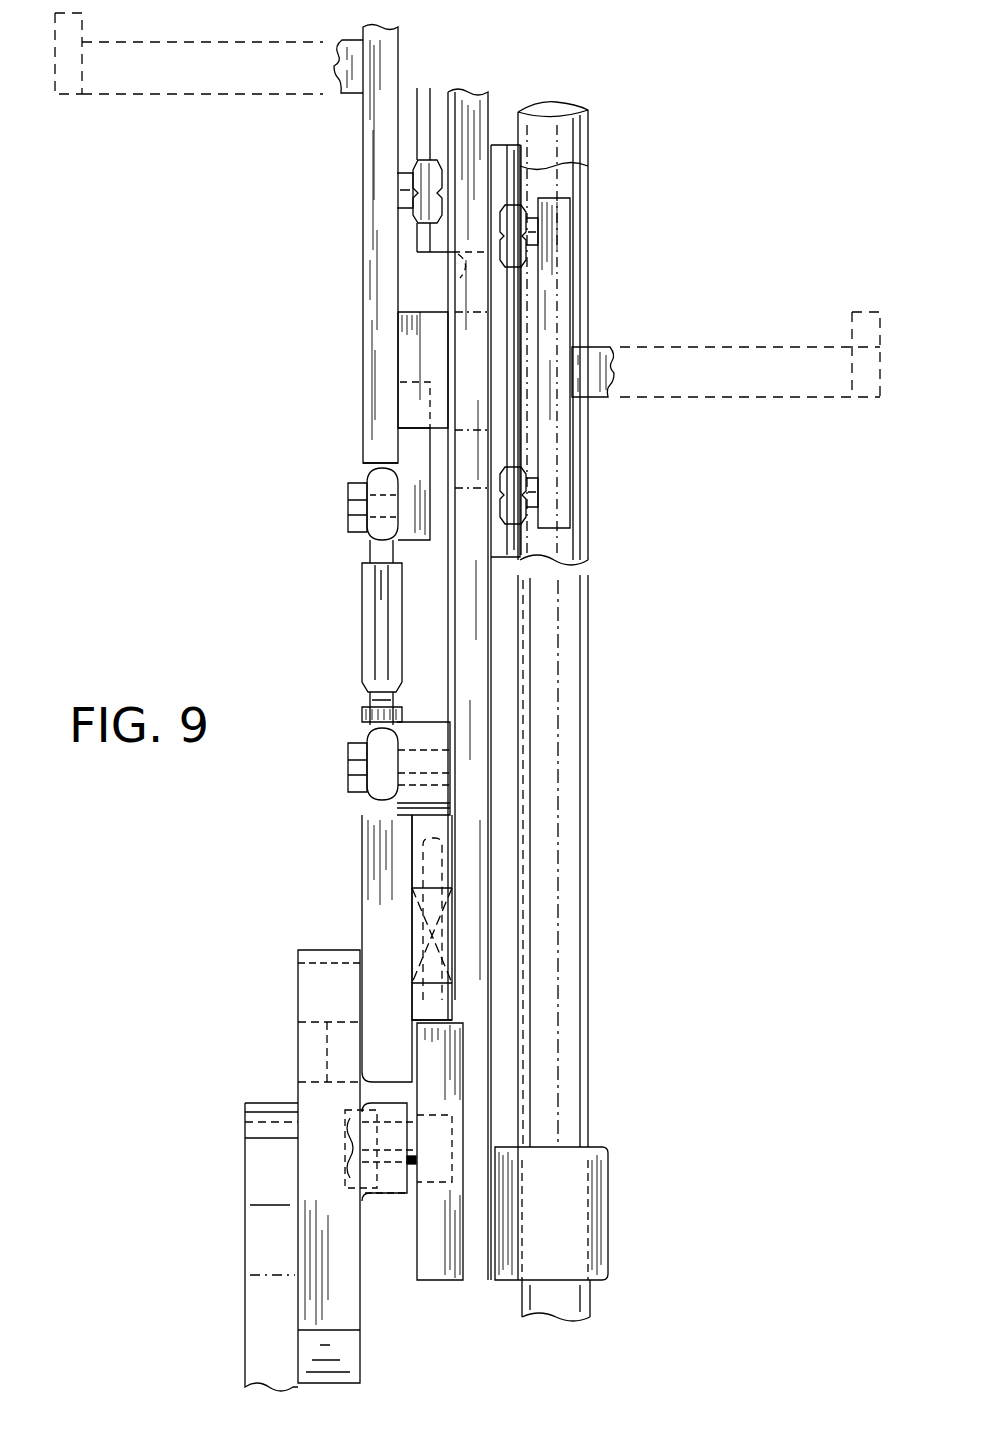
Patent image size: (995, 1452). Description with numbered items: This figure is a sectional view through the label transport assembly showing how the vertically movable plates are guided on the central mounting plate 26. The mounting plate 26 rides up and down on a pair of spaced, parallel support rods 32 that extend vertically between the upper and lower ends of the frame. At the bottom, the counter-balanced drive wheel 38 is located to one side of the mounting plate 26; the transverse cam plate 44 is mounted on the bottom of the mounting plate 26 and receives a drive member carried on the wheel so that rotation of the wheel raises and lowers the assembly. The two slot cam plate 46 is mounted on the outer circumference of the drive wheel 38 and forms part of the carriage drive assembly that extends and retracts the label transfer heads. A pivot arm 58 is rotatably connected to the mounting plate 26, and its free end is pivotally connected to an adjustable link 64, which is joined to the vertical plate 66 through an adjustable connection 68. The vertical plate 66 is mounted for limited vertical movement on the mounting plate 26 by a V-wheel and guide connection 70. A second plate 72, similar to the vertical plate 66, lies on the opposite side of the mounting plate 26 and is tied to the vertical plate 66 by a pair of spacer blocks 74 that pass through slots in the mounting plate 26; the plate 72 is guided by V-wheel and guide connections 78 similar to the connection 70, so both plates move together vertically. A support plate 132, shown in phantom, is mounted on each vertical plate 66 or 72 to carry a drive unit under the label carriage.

The mounting plate 26 is at (470, 105).
The support rods 32 is at (591, 541).
The drive wheel 38 is at (247, 1290).
The transverse cam plate 44 is at (437, 1272).
The two slot cam plate 46 is at (302, 970).
The pivot arm 58 is at (428, 720).
The adjustable link 64 is at (362, 613).
The vertical plate 66 is at (380, 248).
The adjustable connection 68 is at (408, 455).
The V-wheel and guide connection 70 is at (428, 88).
The plate 72 is at (458, 277).
The spacer blocks 74 is at (418, 352).
The V-wheel and guide connections 78 is at (522, 292).
The support plate 132 is at (227, 103).